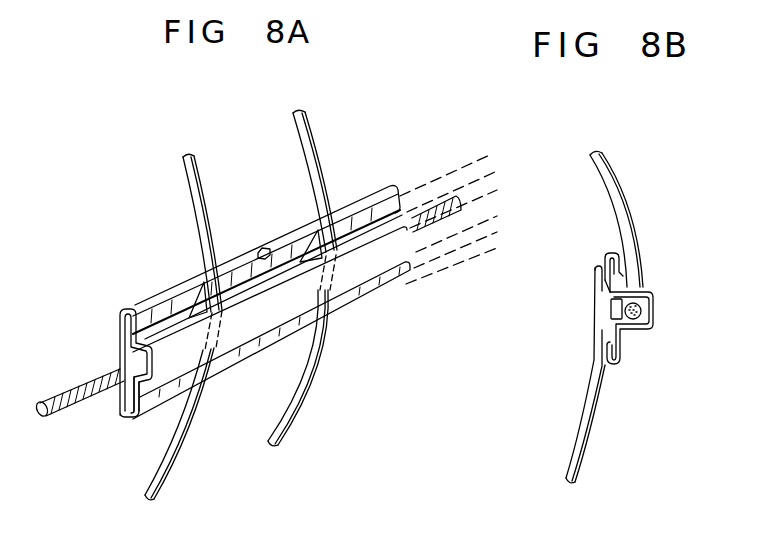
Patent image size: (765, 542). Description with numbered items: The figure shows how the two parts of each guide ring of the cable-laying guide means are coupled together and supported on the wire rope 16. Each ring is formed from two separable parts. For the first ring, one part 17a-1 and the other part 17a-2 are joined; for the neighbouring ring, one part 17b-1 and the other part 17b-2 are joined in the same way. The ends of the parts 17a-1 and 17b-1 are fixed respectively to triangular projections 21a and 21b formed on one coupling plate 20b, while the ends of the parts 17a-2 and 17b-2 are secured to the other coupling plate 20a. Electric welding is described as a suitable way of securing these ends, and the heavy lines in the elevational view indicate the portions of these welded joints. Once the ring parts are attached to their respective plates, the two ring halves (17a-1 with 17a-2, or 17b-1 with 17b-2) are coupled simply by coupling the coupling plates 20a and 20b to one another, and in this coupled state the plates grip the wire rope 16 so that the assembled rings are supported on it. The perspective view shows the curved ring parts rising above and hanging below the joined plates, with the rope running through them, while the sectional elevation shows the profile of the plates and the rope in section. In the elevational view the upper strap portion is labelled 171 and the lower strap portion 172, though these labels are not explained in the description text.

In FIG. 8A, the wire rope 16 is at (61, 409).
In FIG. 8B, the wire rope 16 is at (642, 327).
In FIG. 8A, the part of ring 17a-1 is at (205, 196).
In FIG. 8A, the part of ring 17a-2 is at (194, 411).
In FIG. 8A, the part of ring 17b-1 is at (315, 140).
In FIG. 8A, the part of ring 17b-2 is at (312, 374).
In FIG. 8A, the coupling plate 20a is at (120, 352).
In FIG. 8B, the coupling plate 20a is at (613, 257).
In FIG. 8A, the coupling plate 20b is at (167, 367).
In FIG. 8B, the coupling plate 20b is at (649, 307).
In FIG. 8A, the triangular projection 21a is at (224, 282).
In FIG. 8A, the triangular projection 21b is at (338, 228).
In FIG. 8B, the upper portion of strap 171 is at (612, 198).
In FIG. 8B, the lower portion of strap 172 is at (596, 412).